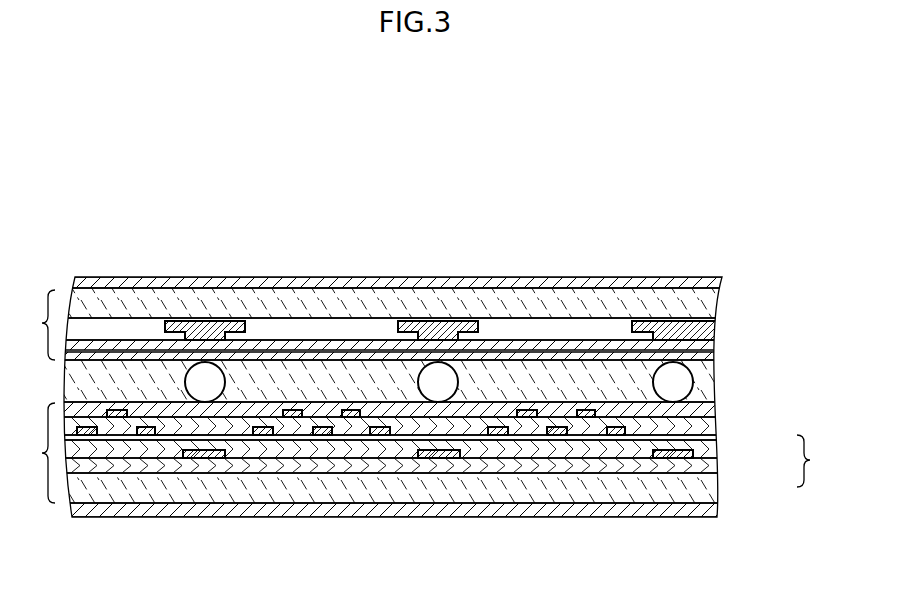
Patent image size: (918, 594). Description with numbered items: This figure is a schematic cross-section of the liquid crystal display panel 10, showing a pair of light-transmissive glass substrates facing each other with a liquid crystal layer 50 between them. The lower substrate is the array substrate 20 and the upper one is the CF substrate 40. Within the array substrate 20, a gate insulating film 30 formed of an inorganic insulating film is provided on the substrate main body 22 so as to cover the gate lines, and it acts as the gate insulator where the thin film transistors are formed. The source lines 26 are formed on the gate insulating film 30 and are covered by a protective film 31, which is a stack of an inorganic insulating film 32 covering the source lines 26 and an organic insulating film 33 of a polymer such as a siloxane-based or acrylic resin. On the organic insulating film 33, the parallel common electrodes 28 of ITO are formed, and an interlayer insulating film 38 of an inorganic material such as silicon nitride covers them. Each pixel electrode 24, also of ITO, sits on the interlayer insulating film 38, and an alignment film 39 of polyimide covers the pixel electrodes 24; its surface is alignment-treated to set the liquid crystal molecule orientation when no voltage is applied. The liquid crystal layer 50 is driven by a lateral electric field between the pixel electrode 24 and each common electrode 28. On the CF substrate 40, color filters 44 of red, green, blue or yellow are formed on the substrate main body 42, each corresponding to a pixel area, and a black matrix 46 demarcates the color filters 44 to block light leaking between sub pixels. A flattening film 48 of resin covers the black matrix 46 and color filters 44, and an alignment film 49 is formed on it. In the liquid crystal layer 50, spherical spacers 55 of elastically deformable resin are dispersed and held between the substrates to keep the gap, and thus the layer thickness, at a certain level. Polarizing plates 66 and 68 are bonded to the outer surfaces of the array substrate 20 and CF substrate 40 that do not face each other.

The liquid crystal display panel 10 is at (753, 168).
The array substrate 20 is at (28, 453).
The substrate main body 22 is at (705, 493).
The pixel electrode 24 is at (118, 408).
The source line 26 is at (205, 458).
The common electrode 28 is at (146, 436).
The gate insulating film 30 is at (710, 467).
The protective film 31 is at (822, 461).
The inorganic insulating film 32 is at (708, 450).
The organic insulating film 33 is at (705, 438).
The interlayer insulating film 38 is at (708, 426).
The alignment film 39 is at (713, 408).
The CF substrate 40 is at (31, 325).
The substrate main body 42 is at (85, 297).
The color filter 44 is at (120, 330).
The black matrix 46 is at (230, 321).
The flattening film 48 is at (700, 342).
The alignment film 49 is at (700, 357).
The liquid crystal layer 50 is at (68, 385).
The spacer 55 is at (172, 437).
The polarizing plate 66 is at (398, 508).
The polarizing plate 68 is at (295, 285).